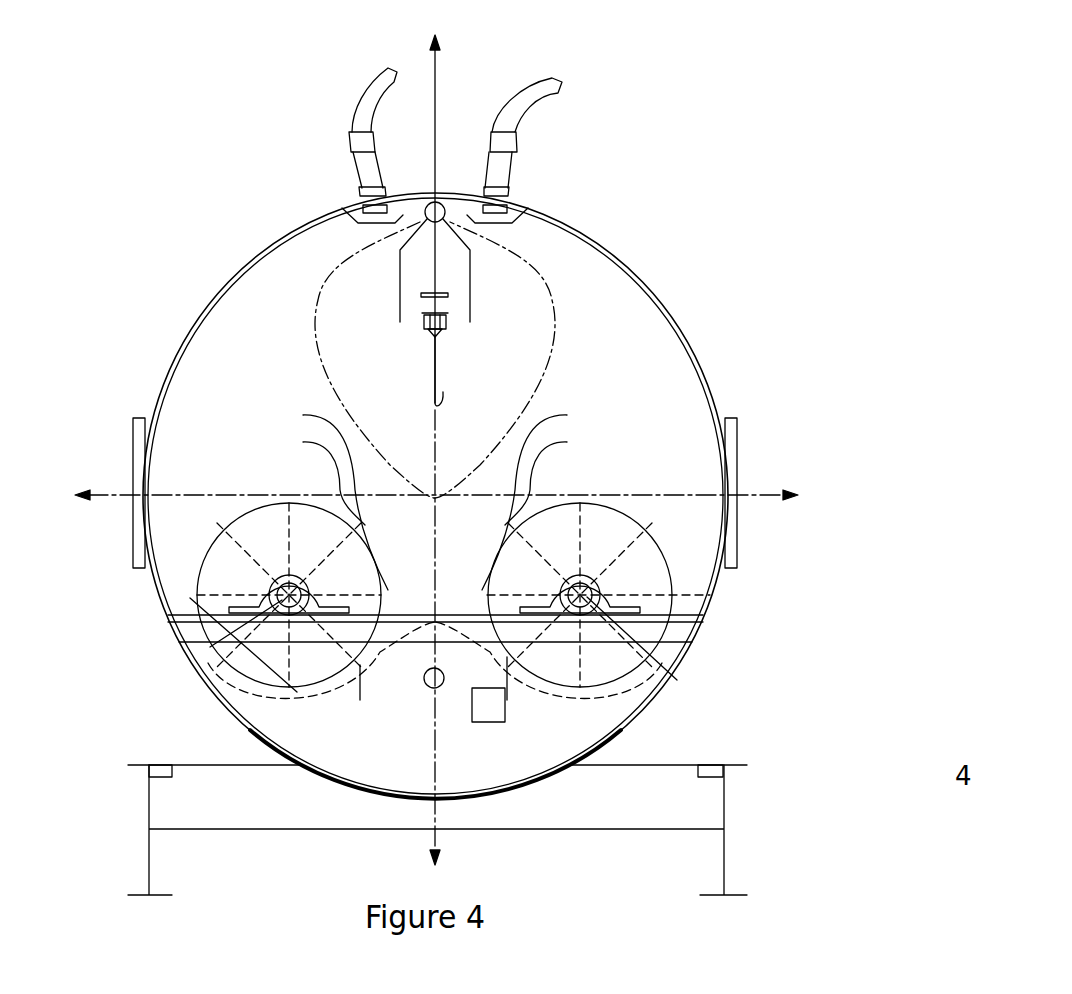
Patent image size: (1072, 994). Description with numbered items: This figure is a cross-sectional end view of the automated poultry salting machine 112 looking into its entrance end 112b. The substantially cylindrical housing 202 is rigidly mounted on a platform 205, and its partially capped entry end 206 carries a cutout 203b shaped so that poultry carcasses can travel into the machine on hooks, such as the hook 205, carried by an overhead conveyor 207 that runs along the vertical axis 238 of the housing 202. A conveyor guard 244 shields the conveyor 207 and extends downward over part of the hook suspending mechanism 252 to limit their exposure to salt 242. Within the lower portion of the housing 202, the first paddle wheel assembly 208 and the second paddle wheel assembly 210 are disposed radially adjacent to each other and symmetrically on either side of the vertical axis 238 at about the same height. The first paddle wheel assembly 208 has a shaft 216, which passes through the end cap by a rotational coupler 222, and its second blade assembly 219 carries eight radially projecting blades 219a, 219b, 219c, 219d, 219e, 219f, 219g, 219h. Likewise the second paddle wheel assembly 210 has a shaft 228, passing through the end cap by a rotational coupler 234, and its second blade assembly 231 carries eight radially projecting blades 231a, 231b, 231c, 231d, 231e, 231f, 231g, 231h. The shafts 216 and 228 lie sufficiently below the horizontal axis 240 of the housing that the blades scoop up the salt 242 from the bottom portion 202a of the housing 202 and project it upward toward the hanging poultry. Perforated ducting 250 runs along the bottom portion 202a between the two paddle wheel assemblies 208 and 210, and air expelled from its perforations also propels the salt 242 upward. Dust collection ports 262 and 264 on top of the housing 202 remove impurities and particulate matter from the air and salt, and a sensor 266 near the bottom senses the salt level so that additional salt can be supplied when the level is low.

The automated poultry salting machine 112 is at (1009, 56).
The entrance end 112b is at (866, 252).
The housing 202 is at (655, 288).
The bottom portion of the housing 202a is at (280, 738).
The cutout 203b is at (578, 240).
The platform 205 is at (717, 803).
The partially capped entry end 206 is at (664, 346).
The overhead conveyor 207 is at (440, 193).
The first paddle wheel assembly 208 is at (684, 466).
The second paddle wheel assembly 210 is at (186, 466).
The shaft 216 is at (683, 660).
The second blade assembly 219 is at (630, 523).
The blade 219a is at (584, 492).
The blade 219b is at (653, 525).
The blade 219c is at (693, 600).
The blade 219d is at (650, 683).
The blade 219e is at (583, 693).
The blade 219f is at (507, 657).
The blade 219g is at (556, 494).
The blade 219h is at (567, 474).
The rotational coupler 222 is at (610, 582).
The shaft 228 is at (197, 660).
The second blade assembly 231 is at (242, 525).
The blade 231a is at (288, 492).
The blade 231b is at (302, 474).
The blade 231c is at (314, 494).
The blade 231d is at (360, 665).
The blade 231e is at (297, 692).
The blade 231f is at (207, 697).
The blade 231g is at (165, 627).
The blade 231h is at (225, 523).
The rotational coupler 234 is at (283, 600).
The vertical axis 238 is at (433, 60).
The horizontal axis 240 is at (760, 495).
The salt 242 is at (558, 740).
The conveyor guard 244 is at (530, 216).
The ducting 250 is at (433, 689).
The hook suspending mechanism 252 is at (428, 332).
The dust collection port 262 is at (543, 105).
The dust collection port 264 is at (352, 110).
The sensor 266 is at (483, 722).